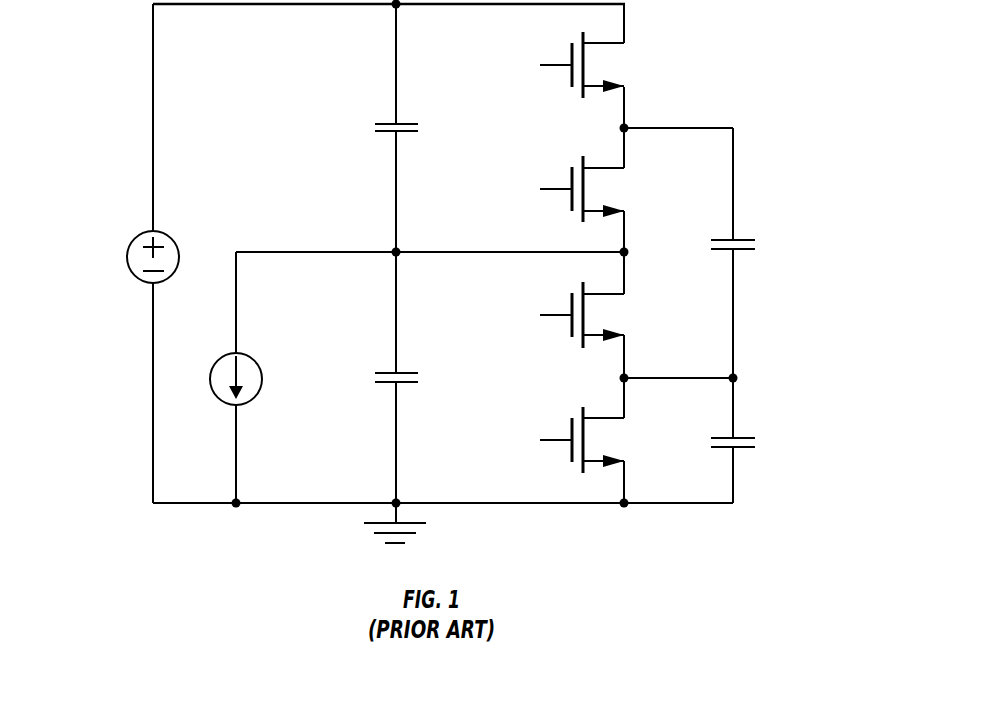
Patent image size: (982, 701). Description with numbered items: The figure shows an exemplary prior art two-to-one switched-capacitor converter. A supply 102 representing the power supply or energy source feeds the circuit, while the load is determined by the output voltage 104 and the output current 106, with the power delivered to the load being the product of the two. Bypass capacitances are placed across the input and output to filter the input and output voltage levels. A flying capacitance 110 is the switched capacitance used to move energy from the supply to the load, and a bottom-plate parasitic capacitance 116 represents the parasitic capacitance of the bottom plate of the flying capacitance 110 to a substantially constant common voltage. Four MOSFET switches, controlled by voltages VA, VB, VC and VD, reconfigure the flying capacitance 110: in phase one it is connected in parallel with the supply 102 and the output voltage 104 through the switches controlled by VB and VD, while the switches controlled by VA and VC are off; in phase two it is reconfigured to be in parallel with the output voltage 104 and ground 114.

The supply 102 is at (103, 285).
The output voltage 104 is at (355, 210).
The output current 106 is at (198, 414).
The flying capacitance 110 is at (800, 285).
The ground 114 is at (456, 548).
The bottom-plate parasitic capacitance 116 is at (805, 475).